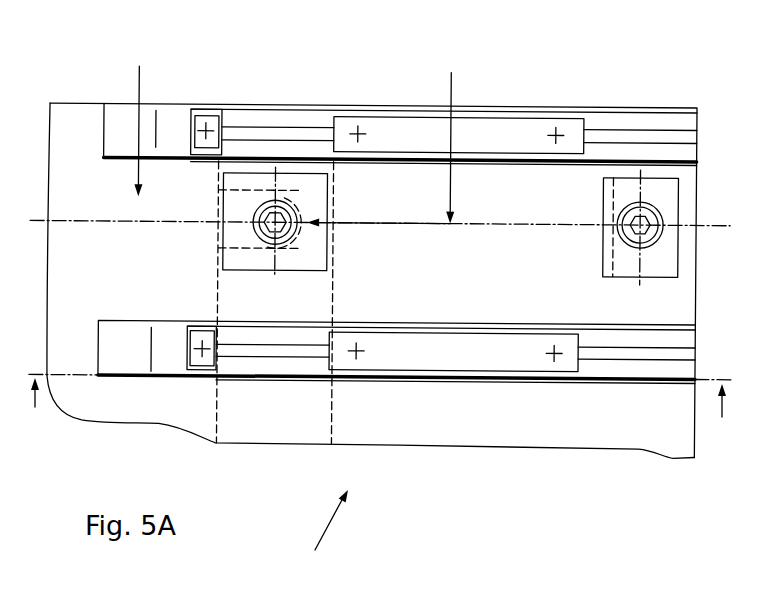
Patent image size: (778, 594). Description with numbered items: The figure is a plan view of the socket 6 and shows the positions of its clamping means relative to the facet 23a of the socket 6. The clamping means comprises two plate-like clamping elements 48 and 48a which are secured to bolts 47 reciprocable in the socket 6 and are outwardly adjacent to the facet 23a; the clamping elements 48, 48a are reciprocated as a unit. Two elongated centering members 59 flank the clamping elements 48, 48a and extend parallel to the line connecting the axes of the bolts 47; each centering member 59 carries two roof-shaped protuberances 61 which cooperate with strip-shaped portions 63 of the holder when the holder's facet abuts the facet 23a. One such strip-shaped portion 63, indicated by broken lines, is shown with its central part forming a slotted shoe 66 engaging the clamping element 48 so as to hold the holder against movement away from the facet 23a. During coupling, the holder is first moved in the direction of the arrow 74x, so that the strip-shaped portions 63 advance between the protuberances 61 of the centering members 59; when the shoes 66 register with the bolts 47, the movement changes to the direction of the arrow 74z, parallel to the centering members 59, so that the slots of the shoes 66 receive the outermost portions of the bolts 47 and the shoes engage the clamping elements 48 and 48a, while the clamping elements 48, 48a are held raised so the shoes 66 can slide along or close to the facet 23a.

The socket 6 is at (323, 533).
The facet 23a is at (133, 115).
The bolt 47 is at (265, 225).
The clamping element 48 is at (313, 250).
The clamping element 48a is at (622, 255).
The centering member 59 is at (525, 126).
The roof-shaped protuberance 61 is at (273, 115).
The strip-shaped portion 63 is at (273, 427).
The slotted shoe 66 is at (218, 263).
The arrow 74X (X-direction) 74x is at (452, 82).
The arrow 74Z (Z-direction) 74z is at (412, 225).